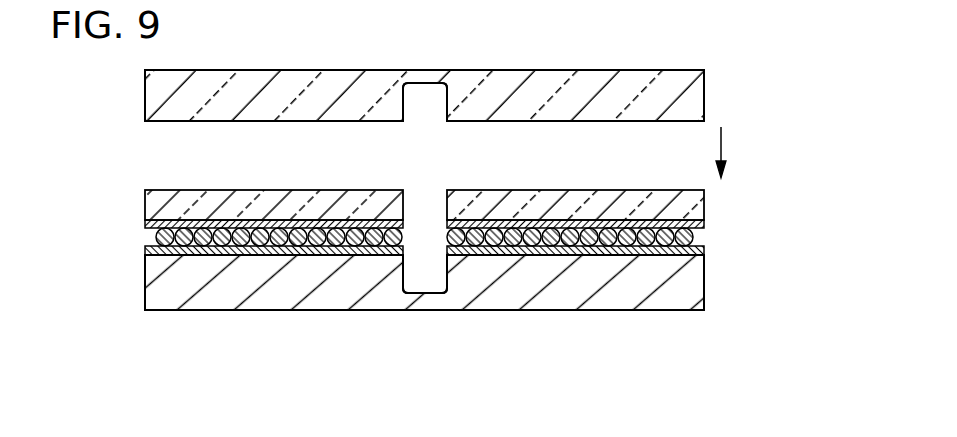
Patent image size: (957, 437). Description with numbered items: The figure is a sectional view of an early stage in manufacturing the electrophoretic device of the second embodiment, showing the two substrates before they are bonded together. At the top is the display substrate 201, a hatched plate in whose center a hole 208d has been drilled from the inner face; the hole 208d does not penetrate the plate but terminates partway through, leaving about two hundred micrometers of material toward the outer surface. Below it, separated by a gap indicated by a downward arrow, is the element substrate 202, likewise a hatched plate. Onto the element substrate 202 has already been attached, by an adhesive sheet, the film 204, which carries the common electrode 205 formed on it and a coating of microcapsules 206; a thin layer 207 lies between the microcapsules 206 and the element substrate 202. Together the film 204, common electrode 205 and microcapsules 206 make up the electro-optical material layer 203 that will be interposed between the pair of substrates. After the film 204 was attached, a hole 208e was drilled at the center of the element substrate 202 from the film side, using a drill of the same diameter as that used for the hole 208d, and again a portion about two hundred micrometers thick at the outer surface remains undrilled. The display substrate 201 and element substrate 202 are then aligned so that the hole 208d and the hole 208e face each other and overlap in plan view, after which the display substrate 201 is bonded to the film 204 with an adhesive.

The display substrate 201 is at (690, 95).
The element substrate 202 is at (690, 283).
The electro-optical material layer 203 is at (429, 243).
The film 204 is at (147, 203).
The common electrode 205 is at (147, 224).
The microcapsules 206 is at (153, 237).
The third layer 207 is at (147, 250).
The hole 208d is at (427, 96).
The hole 208e is at (426, 290).